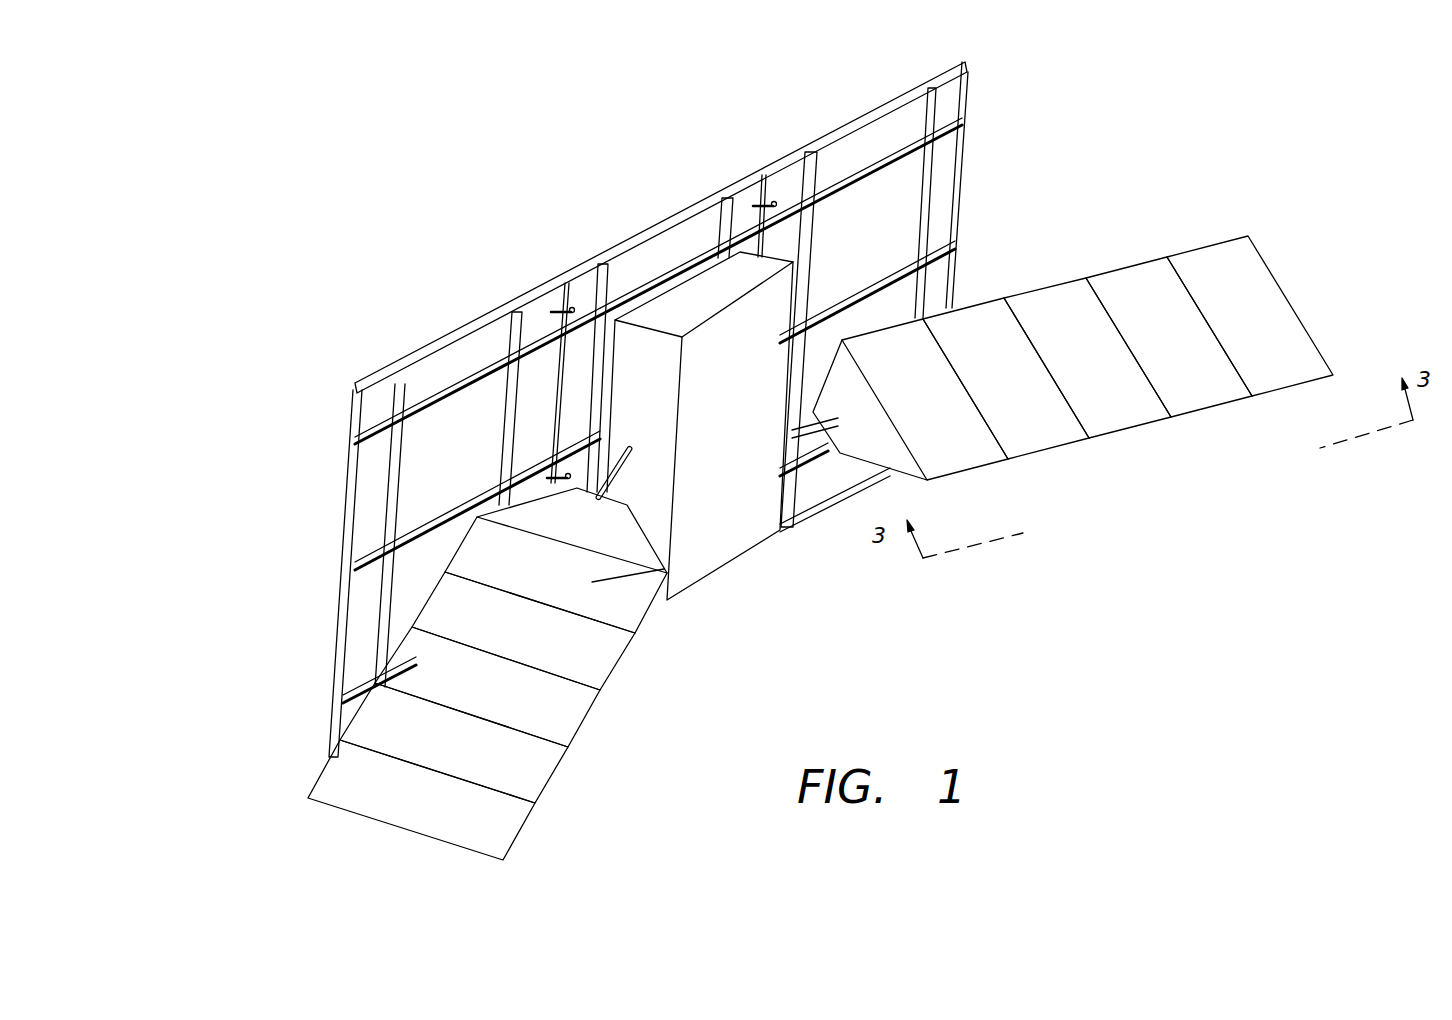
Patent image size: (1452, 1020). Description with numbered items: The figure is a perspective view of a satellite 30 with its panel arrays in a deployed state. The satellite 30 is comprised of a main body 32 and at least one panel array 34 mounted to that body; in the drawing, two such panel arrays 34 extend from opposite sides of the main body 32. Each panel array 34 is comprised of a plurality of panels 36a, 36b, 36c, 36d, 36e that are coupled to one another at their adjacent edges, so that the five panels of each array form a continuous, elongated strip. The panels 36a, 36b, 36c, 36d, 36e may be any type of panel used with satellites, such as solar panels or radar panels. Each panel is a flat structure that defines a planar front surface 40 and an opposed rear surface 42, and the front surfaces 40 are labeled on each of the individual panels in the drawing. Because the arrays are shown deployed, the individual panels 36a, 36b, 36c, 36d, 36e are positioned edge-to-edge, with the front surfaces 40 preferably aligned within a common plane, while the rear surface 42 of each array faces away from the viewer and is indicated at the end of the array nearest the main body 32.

The satellite 30 is at (1168, 73).
The main body 32 is at (707, 550).
The panel array 34 is at (1202, 202).
The panel 36a is at (499, 828).
The panel 36b is at (535, 766).
The panel 36c is at (570, 708).
The panel 36d is at (605, 655).
The panel 36e is at (630, 603).
The front surface 40 is at (558, 594).
The rear surface 42 is at (1035, 270).